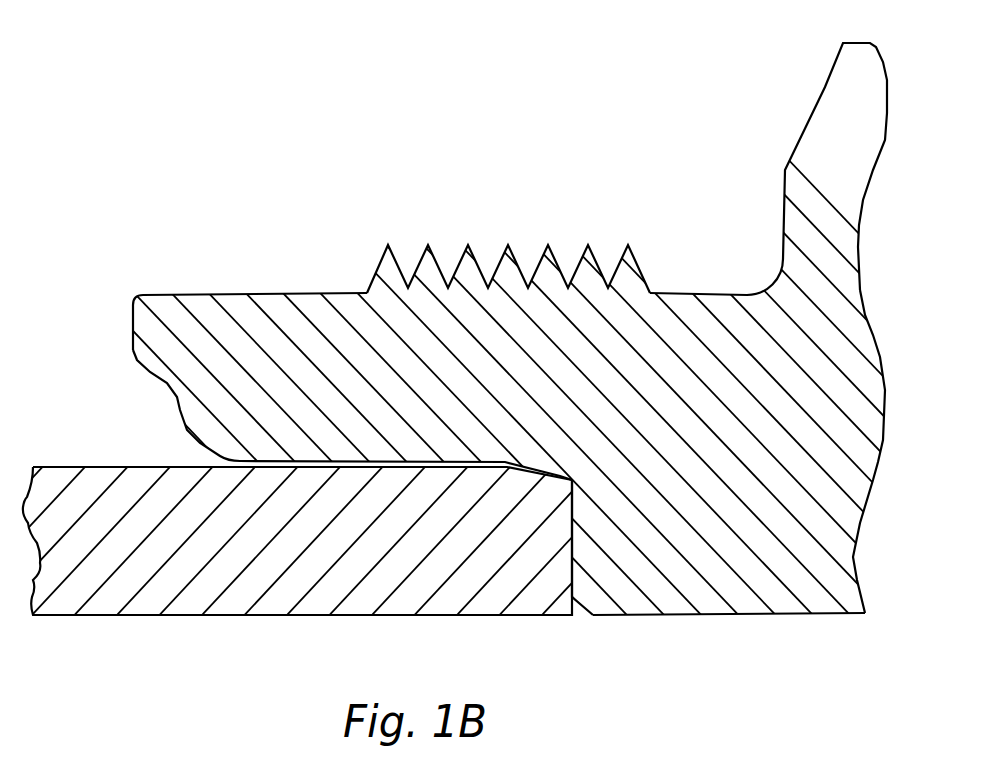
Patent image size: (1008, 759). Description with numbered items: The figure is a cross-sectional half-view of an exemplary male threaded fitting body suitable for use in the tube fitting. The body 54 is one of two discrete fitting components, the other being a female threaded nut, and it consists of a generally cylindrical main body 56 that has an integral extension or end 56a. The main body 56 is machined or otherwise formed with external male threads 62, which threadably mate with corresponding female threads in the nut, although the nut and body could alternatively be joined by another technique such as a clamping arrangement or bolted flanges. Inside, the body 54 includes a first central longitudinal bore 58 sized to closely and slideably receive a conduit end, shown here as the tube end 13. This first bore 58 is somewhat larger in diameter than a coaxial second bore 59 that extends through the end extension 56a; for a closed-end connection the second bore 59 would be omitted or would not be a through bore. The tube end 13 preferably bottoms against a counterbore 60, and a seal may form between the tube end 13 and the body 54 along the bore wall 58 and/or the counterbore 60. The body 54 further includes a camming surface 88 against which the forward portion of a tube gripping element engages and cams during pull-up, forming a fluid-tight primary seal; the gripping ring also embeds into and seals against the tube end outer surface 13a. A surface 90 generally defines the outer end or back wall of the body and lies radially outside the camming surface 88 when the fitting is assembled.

The tube end 13 is at (200, 615).
The tube end outer surface 13a is at (155, 467).
The male threaded body 54 is at (257, 203).
The main body 56 is at (702, 286).
The end extension 56a is at (825, 223).
The first central longitudinal bore 58 is at (357, 460).
The second bore 59 is at (775, 613).
The counterbore 60 is at (573, 532).
The external male threads 62 is at (522, 258).
The camming surface 88 is at (177, 400).
The surface 90 is at (133, 332).